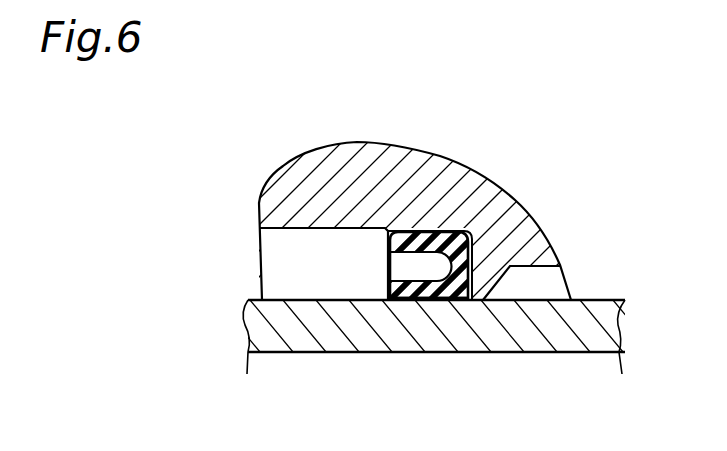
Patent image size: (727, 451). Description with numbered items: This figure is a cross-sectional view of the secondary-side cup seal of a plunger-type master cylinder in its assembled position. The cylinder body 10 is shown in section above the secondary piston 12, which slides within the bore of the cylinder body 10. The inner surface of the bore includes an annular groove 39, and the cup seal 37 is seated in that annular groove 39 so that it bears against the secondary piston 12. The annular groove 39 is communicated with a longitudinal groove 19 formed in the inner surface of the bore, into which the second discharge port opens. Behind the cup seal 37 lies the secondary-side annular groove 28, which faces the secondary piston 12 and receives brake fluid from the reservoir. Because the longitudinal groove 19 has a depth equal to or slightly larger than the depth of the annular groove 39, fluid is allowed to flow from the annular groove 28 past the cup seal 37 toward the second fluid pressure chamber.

The cylinder body 10 is at (275, 195).
The longitudinal groove 19 is at (278, 270).
The annular groove 39 is at (457, 231).
The annular groove 28 is at (538, 292).
The secondary piston 12 is at (605, 310).
The cup seal 37 is at (455, 300).